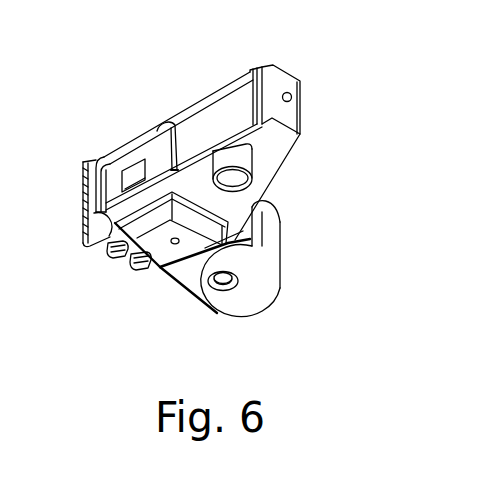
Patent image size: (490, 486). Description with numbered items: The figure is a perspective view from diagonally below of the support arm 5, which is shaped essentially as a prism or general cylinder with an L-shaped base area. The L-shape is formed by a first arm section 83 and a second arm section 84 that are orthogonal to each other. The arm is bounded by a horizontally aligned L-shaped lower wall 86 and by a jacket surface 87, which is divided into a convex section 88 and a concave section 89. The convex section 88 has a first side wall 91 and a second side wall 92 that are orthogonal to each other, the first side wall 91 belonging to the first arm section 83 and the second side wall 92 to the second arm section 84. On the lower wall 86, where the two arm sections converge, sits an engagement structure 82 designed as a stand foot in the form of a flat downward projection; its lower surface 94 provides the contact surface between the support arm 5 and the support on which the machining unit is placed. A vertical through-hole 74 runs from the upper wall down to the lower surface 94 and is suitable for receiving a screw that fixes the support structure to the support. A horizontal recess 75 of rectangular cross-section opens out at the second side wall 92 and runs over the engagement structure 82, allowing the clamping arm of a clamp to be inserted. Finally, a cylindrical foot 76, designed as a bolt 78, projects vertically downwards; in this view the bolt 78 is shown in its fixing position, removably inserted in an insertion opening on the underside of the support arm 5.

The support arm 5 is at (91, 87).
The through-hole 74 is at (176, 245).
The recess 75 is at (105, 154).
The cylindrical foot 76 is at (229, 166).
The bolt 78 is at (232, 178).
The engagement structure 82 is at (162, 262).
The first arm section 83 is at (289, 246).
The second arm section 84 is at (149, 120).
The lower wall 86 is at (255, 293).
The jacket surface 87 is at (140, 176).
The convex section 88 is at (135, 183).
The concave section 89 is at (267, 230).
The first side wall 91 is at (184, 313).
The second side wall 92 is at (233, 99).
The lower surface 94 is at (140, 261).